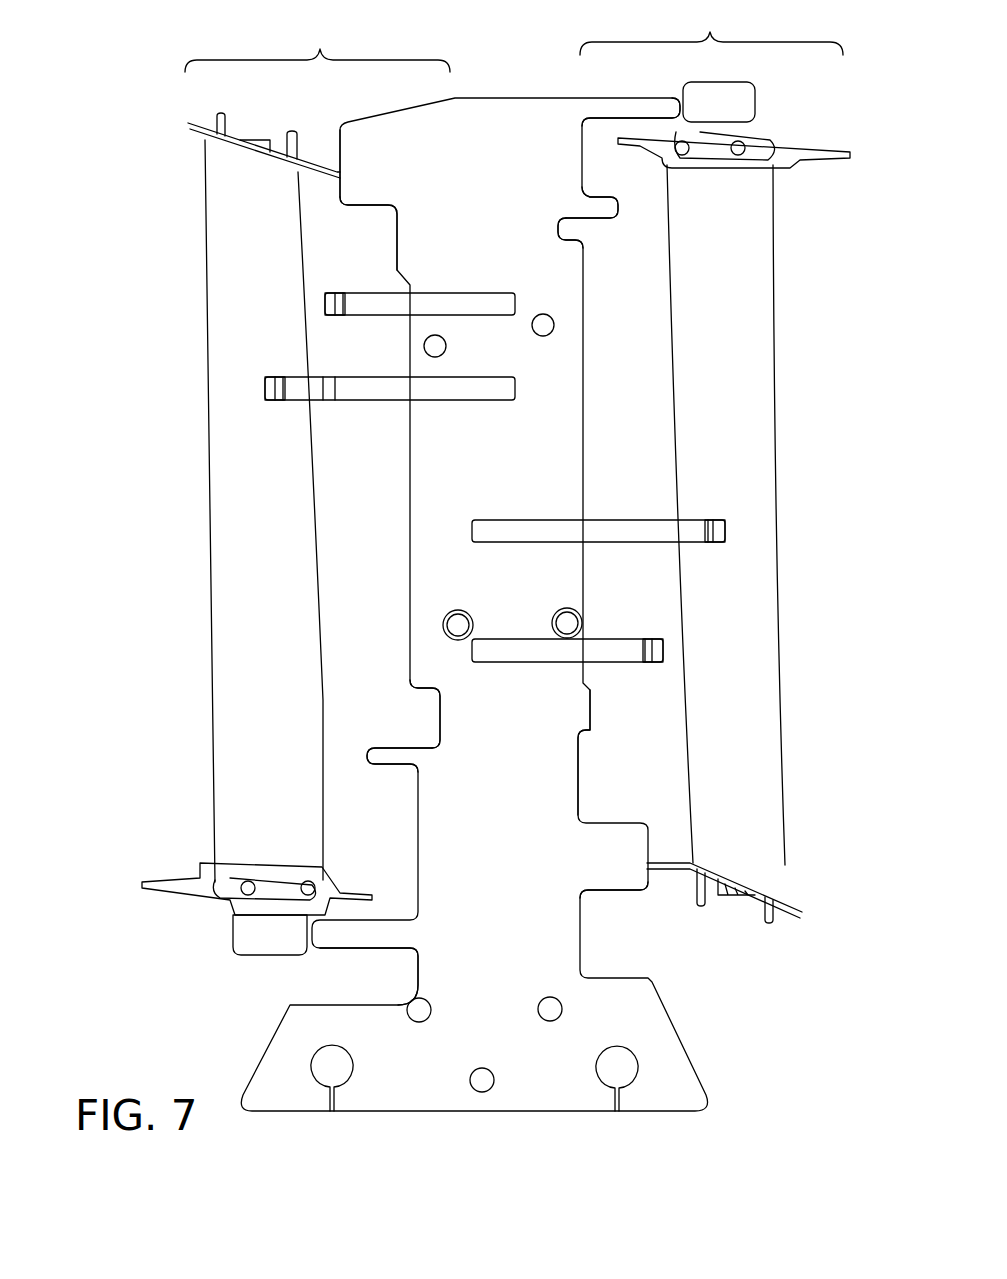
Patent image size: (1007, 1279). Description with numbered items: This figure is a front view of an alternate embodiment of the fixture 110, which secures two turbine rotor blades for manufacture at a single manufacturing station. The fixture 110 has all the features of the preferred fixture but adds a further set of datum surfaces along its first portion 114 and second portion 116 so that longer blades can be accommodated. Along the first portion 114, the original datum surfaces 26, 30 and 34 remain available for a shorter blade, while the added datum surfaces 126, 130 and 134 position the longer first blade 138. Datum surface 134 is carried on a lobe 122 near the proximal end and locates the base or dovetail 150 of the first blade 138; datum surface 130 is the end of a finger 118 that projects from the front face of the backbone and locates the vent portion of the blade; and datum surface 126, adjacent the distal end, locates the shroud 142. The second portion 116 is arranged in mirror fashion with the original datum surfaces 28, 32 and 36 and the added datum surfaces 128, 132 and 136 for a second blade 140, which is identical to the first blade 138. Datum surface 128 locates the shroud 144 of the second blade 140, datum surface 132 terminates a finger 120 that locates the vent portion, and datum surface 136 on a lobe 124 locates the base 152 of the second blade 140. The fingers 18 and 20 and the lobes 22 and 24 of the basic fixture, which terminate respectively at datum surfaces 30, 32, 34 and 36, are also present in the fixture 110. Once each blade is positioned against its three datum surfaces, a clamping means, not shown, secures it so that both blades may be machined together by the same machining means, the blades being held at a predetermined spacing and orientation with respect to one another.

The fixture 110 is at (728, 1106).
The first portion 114 is at (320, 49).
The second portion 116 is at (710, 32).
The finger 18 is at (465, 293).
The finger 118 is at (472, 377).
The finger 120 is at (525, 520).
The finger 20 is at (525, 639).
The lobe 22 is at (410, 745).
The lobe 24 is at (605, 193).
The datum surface 26 is at (400, 247).
The datum surface 28 is at (590, 723).
The datum surface 30 is at (325, 303).
The datum surface 32 is at (627, 639).
The datum surface 34 is at (367, 756).
The datum surface 36 is at (627, 207).
The lobe 122 is at (377, 950).
The lobe 124 is at (632, 98).
The datum surface 126 is at (337, 140).
The datum surface 128 is at (650, 880).
The datum surface 130 is at (265, 387).
The datum surface 132 is at (693, 520).
The datum surface 134 is at (300, 940).
The datum surface 136 is at (687, 104).
The first blade 138 is at (195, 427).
The second blade 140 is at (790, 318).
The shroud 142 is at (243, 137).
The shroud 144 is at (780, 912).
The base 150 is at (235, 935).
The base 152 is at (755, 112).